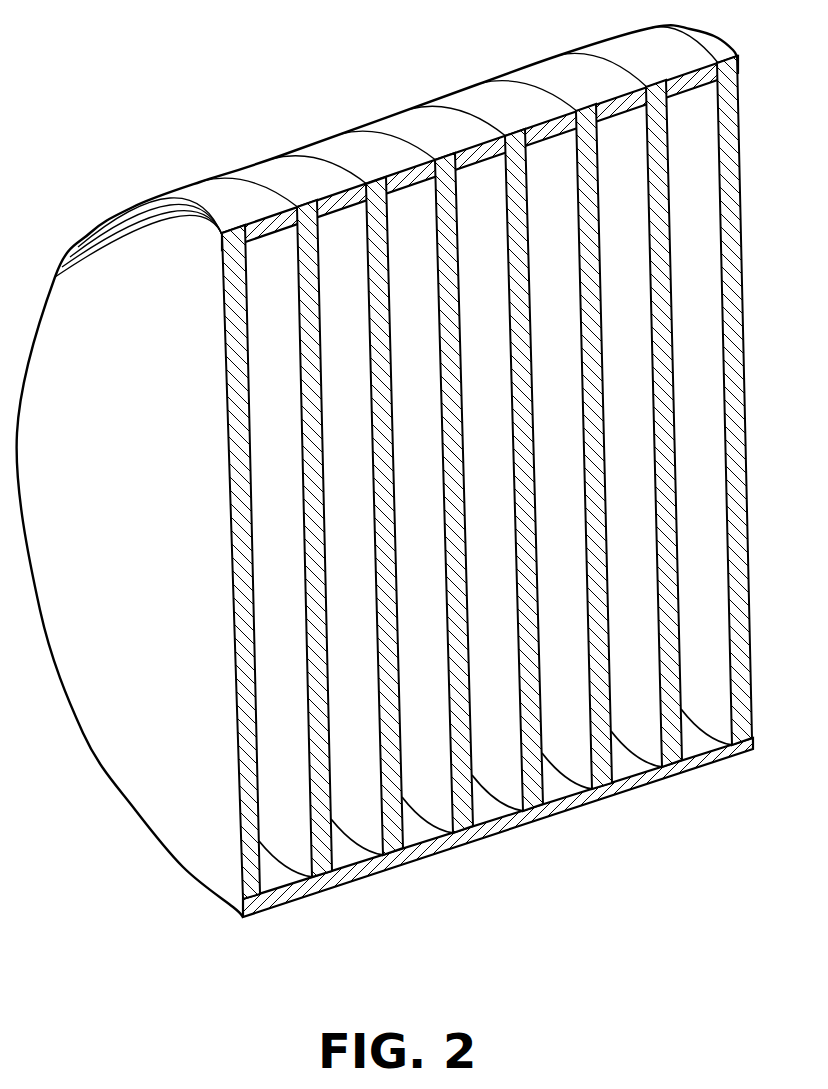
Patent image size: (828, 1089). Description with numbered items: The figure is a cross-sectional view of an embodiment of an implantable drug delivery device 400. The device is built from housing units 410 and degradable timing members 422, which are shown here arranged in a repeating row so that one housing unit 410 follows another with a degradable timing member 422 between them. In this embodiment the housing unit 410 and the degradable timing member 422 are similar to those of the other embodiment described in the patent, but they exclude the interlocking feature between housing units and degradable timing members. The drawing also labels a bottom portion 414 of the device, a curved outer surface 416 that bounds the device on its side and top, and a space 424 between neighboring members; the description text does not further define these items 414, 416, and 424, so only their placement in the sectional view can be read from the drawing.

The frame assembly 400 is at (208, 74).
The housing unit 410 is at (251, 162).
The bottom rail 414 is at (283, 905).
The curved outer surface 416 is at (207, 193).
The degradable timing member 422 is at (332, 893).
The opening between slats 424 is at (545, 828).